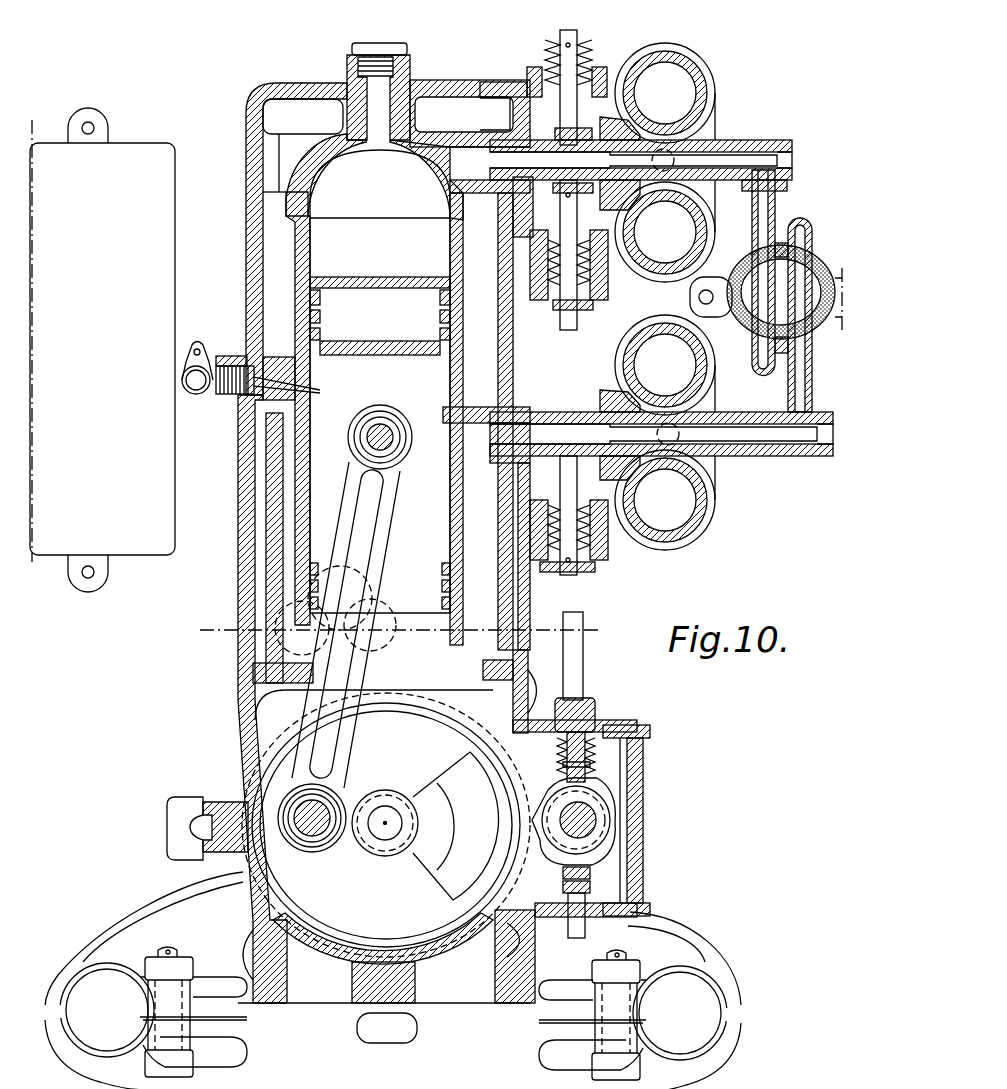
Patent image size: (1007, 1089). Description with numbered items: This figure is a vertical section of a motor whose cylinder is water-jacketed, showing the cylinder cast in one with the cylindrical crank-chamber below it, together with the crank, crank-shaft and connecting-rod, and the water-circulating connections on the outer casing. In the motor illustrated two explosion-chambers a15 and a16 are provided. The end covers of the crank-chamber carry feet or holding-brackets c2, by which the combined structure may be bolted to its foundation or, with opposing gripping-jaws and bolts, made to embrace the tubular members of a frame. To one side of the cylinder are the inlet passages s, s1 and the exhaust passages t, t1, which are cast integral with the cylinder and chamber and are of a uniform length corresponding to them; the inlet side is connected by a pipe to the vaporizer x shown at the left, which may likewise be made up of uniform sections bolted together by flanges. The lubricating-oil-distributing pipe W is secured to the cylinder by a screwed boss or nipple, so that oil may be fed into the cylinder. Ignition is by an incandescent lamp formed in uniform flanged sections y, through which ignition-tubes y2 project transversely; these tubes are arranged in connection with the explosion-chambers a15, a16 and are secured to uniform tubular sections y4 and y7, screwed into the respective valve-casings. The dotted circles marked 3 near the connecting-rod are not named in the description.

The vaporizer x is at (314, 375).
The lubricating-oil-distributing pipe W is at (198, 350).
The explosion-chamber a15 is at (380, 245).
The explosion-chamber a16 is at (402, 451).
The section circles 3 is at (398, 600).
The inlet passage s is at (657, 93).
The exhaust passage t is at (657, 231).
The inlet passage s1 is at (657, 365).
The exhaust passage t1 is at (657, 500).
The tubular section y4 is at (737, 140).
The tubular section y7 is at (755, 457).
The ignition-tube y2 is at (758, 210).
The ignition-lamp section y is at (581, 775).
The feet or holding-brackets c2 is at (125, 943).